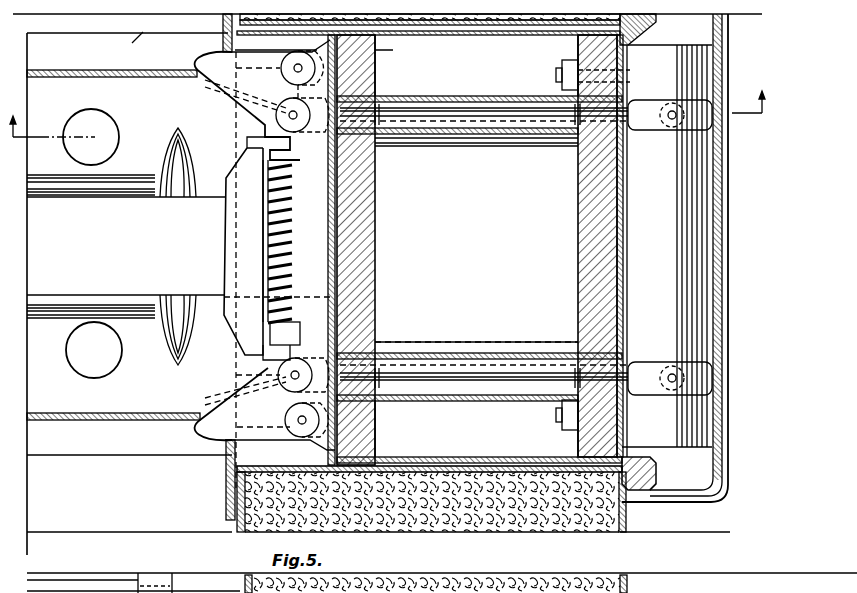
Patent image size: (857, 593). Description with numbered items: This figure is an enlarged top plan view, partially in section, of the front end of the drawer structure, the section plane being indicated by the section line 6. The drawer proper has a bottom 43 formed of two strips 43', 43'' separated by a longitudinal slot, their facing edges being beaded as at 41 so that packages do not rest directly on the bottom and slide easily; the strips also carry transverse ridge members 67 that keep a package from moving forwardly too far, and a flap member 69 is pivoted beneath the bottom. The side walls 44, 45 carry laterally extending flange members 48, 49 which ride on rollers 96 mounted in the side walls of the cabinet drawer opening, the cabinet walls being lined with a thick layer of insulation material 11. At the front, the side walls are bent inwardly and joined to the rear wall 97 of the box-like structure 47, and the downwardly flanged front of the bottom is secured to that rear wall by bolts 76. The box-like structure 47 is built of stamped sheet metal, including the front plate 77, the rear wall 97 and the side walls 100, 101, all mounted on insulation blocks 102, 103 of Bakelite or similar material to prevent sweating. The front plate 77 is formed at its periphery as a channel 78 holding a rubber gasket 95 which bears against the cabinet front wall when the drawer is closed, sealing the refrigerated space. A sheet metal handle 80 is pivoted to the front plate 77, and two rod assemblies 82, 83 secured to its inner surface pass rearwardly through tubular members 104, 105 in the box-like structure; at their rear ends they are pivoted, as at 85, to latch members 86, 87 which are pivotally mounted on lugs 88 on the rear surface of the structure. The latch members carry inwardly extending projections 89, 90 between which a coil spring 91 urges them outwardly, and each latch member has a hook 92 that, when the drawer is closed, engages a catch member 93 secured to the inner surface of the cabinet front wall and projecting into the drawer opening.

The flange member 49 is at (140, 28).
The catch member 93 is at (233, 508).
The hook 92 is at (233, 458).
The latch member 87 is at (210, 66).
The side wall 45 is at (86, 70).
The bottom 43 is at (101, 237).
The section line 6 is at (384, 127).
The pivot 85 is at (292, 378).
The inwardly extending projection 89 is at (305, 244).
The bolt 76 is at (284, 243).
The inwardly extending projection 90 is at (277, 147).
The flap member 69 is at (277, 347).
The coil spring 91 is at (285, 225).
The transverse ridge member 67 is at (176, 195).
The strip 43'' is at (161, 281).
The bead 41 is at (52, 302).
The strip 43' is at (91, 286).
The rear wall 97 is at (340, 243).
The insulation block 103 is at (365, 310).
The lug 88 is at (326, 231).
The box-like structure 47 is at (467, 37).
The side wall 101 is at (503, 48).
The rubber gasket 95 is at (656, 479).
The rod assembly 83 is at (500, 118).
The tubular member 105 is at (545, 143).
The tubular member 104 is at (489, 355).
The rod assembly 82 is at (482, 395).
The side wall 100 is at (520, 450).
The front plate 77 is at (625, 255).
The insulation block 102 is at (586, 305).
The handle 80 is at (730, 300).
The latch member 86 is at (235, 402).
The side wall 44 is at (113, 419).
The flange member 48 is at (158, 447).
The roller 96 is at (247, 475).
The channel 78 is at (624, 496).
The insulation material 11 is at (560, 580).